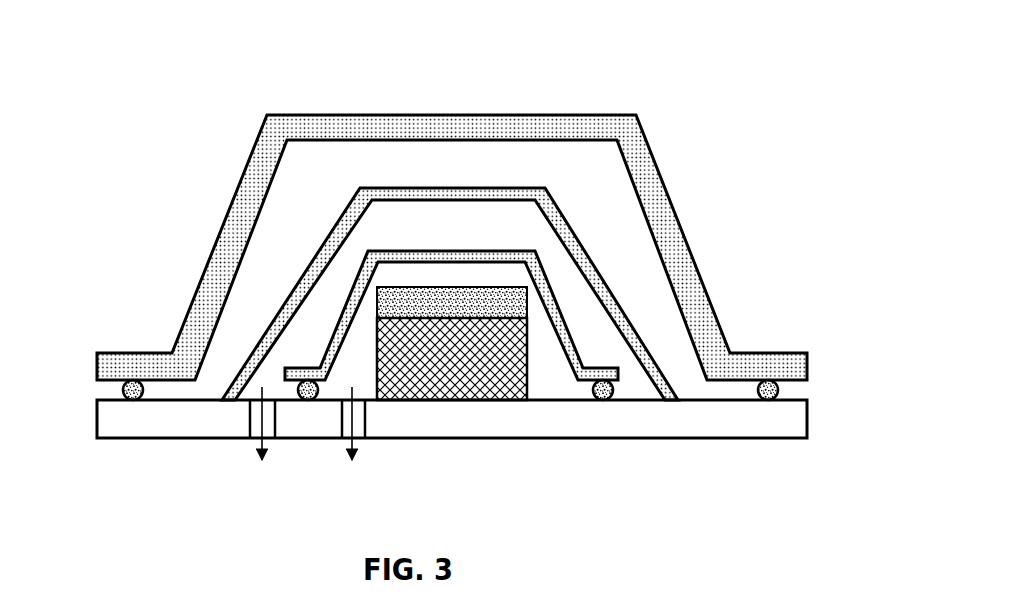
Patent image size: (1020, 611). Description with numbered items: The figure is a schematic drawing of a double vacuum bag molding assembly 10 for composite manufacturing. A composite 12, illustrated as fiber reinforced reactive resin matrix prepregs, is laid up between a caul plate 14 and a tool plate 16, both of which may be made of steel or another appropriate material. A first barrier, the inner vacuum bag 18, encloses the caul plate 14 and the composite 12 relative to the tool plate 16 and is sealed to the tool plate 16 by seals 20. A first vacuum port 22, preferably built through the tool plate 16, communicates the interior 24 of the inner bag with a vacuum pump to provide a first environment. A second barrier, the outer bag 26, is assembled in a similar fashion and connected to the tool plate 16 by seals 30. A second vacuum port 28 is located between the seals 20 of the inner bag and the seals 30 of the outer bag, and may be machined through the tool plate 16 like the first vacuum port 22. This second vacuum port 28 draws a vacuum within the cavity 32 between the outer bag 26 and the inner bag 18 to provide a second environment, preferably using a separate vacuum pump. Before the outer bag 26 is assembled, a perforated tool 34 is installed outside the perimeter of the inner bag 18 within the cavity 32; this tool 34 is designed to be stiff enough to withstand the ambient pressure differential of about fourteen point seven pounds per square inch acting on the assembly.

The double vacuum bag molding assembly 10 is at (610, 82).
The composite 12 is at (507, 395).
The caul plate 14 is at (443, 287).
The tool plate 16 is at (588, 437).
The vacuum bag 18 is at (438, 250).
The seals 20 is at (298, 389).
The first vacuum port 22 is at (362, 417).
The interior 24 is at (558, 383).
The bag 26 is at (708, 287).
The second vacuum port 28 is at (253, 427).
The seals 30 is at (123, 392).
The cavity 32 is at (312, 224).
The perforated tool 34 is at (473, 187).